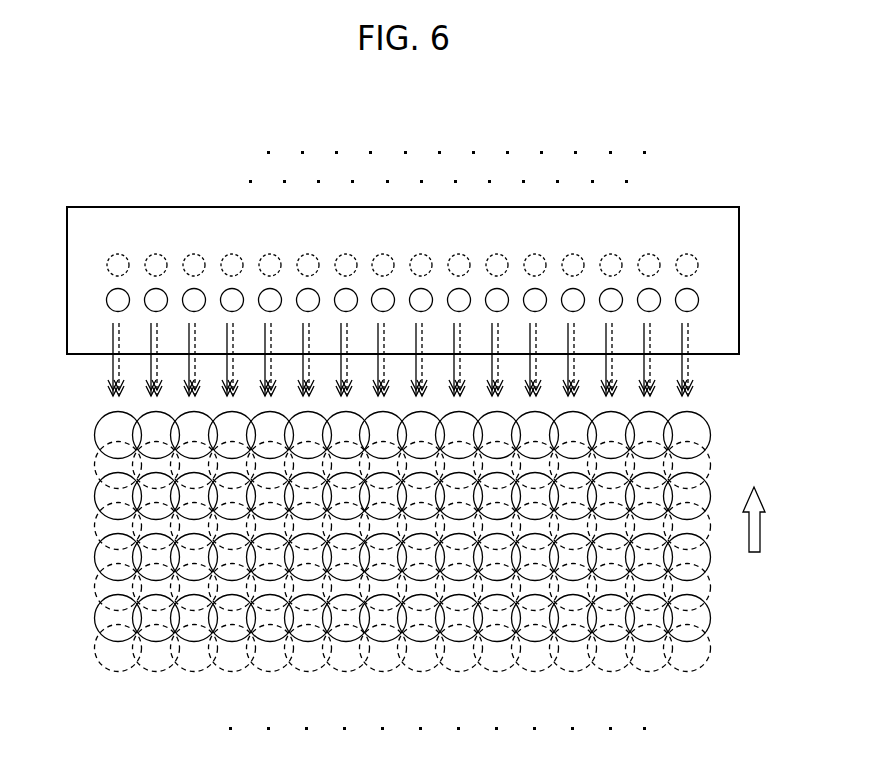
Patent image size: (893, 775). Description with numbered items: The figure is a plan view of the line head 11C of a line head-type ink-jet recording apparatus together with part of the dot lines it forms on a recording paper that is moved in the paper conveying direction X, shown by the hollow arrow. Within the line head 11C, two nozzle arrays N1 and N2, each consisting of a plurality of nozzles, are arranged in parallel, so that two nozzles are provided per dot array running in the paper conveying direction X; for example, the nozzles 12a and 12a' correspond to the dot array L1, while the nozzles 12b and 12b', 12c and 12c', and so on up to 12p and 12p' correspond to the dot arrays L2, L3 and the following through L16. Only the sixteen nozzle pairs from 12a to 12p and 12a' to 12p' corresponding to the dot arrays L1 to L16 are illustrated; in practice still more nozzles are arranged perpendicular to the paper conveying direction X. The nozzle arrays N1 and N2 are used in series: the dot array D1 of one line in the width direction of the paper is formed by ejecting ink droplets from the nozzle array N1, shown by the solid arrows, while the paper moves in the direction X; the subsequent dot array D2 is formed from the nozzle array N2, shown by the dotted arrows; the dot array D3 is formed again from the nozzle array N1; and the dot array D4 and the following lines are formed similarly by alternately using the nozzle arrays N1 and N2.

The line head 11C is at (726, 318).
The nozzle 12a is at (97, 242).
The nozzle 12b is at (150, 242).
The nozzle 12c is at (198, 242).
The nozzle 12p is at (672, 243).
The nozzle 12a' is at (119, 208).
The nozzle 12b' is at (171, 208).
The nozzle 12c' is at (217, 208).
The nozzle 12p' is at (688, 208).
The nozzle array N1 is at (364, 242).
The nozzle array N2 is at (368, 208).
The dot array D1 is at (369, 435).
The dot array D2 is at (369, 465).
The dot array D3 is at (369, 496).
The dot array D4 is at (369, 526).
The dot array L1 is at (117, 713).
The dot array L2 is at (155, 713).
The dot array L3 is at (192, 713).
The dot array L16 is at (687, 714).
The paper conveying direction X is at (754, 507).